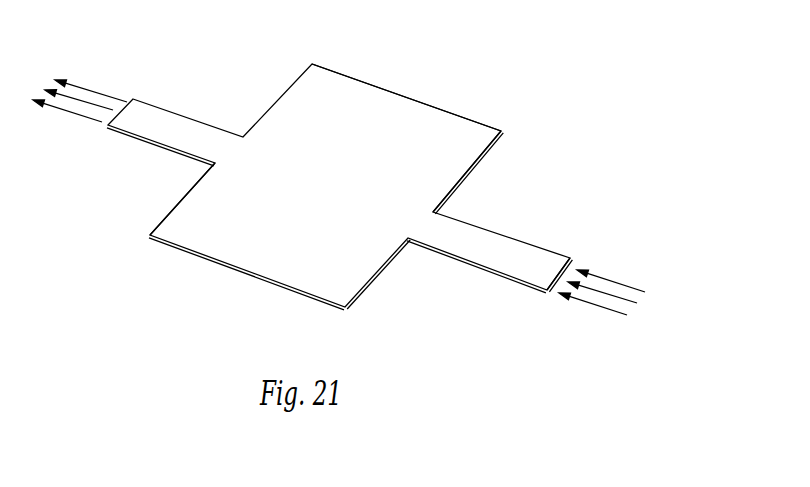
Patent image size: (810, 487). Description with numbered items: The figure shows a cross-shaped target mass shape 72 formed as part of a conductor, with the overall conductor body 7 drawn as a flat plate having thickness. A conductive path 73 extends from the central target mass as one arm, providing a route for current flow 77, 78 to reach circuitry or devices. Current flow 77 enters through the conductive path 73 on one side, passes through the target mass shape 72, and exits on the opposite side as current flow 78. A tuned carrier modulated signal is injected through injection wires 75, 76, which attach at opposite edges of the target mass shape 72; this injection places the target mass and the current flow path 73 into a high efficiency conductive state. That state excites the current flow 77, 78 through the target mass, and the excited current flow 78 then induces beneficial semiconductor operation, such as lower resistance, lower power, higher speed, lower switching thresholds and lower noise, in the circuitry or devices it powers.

The cross-shaped plate 7 is at (150, 101).
The target mass shape 72 is at (403, 90).
The conductive path 73 is at (572, 258).
The injection wire 75 is at (502, 130).
The injection wire 76 is at (150, 238).
The current flow 77 is at (635, 282).
The current flow 78 is at (67, 72).